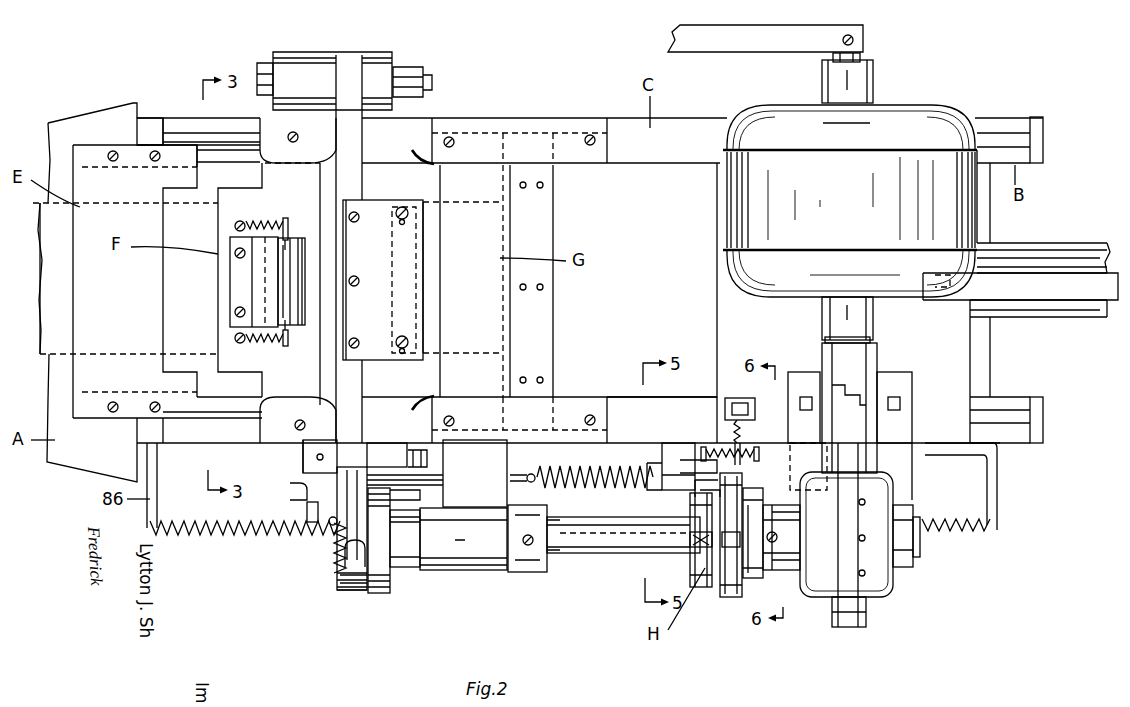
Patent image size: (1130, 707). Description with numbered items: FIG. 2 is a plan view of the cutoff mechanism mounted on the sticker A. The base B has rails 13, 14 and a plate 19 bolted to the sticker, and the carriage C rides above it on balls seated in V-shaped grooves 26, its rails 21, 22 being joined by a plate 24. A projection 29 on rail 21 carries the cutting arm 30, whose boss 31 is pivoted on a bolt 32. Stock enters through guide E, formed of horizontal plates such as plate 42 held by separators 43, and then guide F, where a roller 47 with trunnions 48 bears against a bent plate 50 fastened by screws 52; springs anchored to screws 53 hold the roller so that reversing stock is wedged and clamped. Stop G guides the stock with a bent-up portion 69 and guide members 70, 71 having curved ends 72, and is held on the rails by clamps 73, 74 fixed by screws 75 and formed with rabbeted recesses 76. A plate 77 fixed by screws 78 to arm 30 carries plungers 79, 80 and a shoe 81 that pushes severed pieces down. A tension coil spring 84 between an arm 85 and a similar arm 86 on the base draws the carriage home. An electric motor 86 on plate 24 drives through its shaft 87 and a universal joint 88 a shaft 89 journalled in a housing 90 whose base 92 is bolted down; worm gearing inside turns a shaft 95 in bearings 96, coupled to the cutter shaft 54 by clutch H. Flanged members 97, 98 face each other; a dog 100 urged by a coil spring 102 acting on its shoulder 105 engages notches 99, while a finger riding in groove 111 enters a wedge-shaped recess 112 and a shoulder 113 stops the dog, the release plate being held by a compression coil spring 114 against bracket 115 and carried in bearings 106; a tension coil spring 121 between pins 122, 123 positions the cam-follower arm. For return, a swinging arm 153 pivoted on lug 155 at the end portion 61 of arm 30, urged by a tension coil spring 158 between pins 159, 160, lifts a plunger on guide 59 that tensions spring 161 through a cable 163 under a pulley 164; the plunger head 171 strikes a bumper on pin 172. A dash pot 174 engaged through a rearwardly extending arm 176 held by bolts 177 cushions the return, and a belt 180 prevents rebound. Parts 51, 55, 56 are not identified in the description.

The rail 13 is at (1022, 118).
The rail 14 is at (1023, 407).
The plate 19 is at (148, 125).
The rail 21 is at (687, 128).
The rail 22 is at (612, 397).
The plate 24 is at (960, 339).
The V-shaped groove 26 is at (1005, 140).
The projection 29 is at (293, 65).
The arm 30 is at (353, 141).
The boss 31 is at (379, 63).
The bolt 32 is at (402, 67).
The horizontal plate 42 is at (78, 278).
The separator 43 is at (94, 163).
The roller 47 is at (298, 270).
The trunnion 48 is at (287, 218).
The bent plate 50 is at (262, 320).
The spring 51 is at (268, 221).
The screw 52 is at (240, 306).
The screw 53 is at (240, 221).
The shaft 54 is at (573, 545).
The cylinder 55 is at (470, 560).
The gear 56 is at (380, 598).
The guide 59 is at (385, 443).
The extreme portion of arm 61 is at (340, 598).
The bent-up portion 69 is at (445, 312).
The guide member 70 is at (484, 163).
The guide member 71 is at (475, 395).
The curved end 72 is at (415, 160).
The clamp 73 is at (531, 117).
The clamp 74 is at (571, 410).
The screw 75 is at (452, 136).
The rabbeted recess 76 is at (571, 137).
The plate 77 is at (383, 281).
The screw 78 is at (356, 340).
The plunger 79 is at (407, 217).
The plunger 80 is at (407, 343).
The shoe 81 is at (416, 251).
The tension coil spring 84 is at (986, 532).
The arm 85 is at (997, 480).
The electric motor 86 is at (935, 118).
The motor shaft 87 is at (873, 337).
The universal joint 88 is at (870, 397).
The shaft 89 is at (852, 628).
The housing 90 is at (883, 590).
The base 92 is at (808, 382).
The shaft 95 is at (917, 548).
The bearing 96 is at (920, 565).
The flanged member 97 is at (735, 582).
The flanged member 98 is at (760, 562).
The notch 99 is at (750, 520).
The dog 100 is at (752, 542).
The coil spring 102 is at (705, 553).
The shoulder 105 is at (748, 592).
The bearing 106 is at (675, 453).
The groove 111 is at (702, 585).
The wedge-shaped recess 112 is at (700, 543).
The shoulder 113 is at (685, 494).
The compression coil spring 114 is at (712, 445).
The bracket 115 is at (745, 400).
The tension coil spring 121 is at (715, 452).
The pin 122 is at (708, 452).
The pin 123 is at (745, 451).
The swinging arm 153 is at (305, 487).
The lug 155 is at (352, 505).
The tension coil spring 158 is at (334, 548).
The pin 159 is at (307, 510).
The pin 160 is at (338, 570).
The spring 161 is at (573, 490).
The cable 163 is at (520, 478).
The pulley 164 is at (406, 565).
The head 171 is at (313, 450).
The pin 172 is at (316, 457).
The dash pot 174 is at (1068, 248).
The rearwardly extending arm 176 is at (1022, 273).
The bolt 177 is at (960, 280).
The belt 180 is at (668, 40).